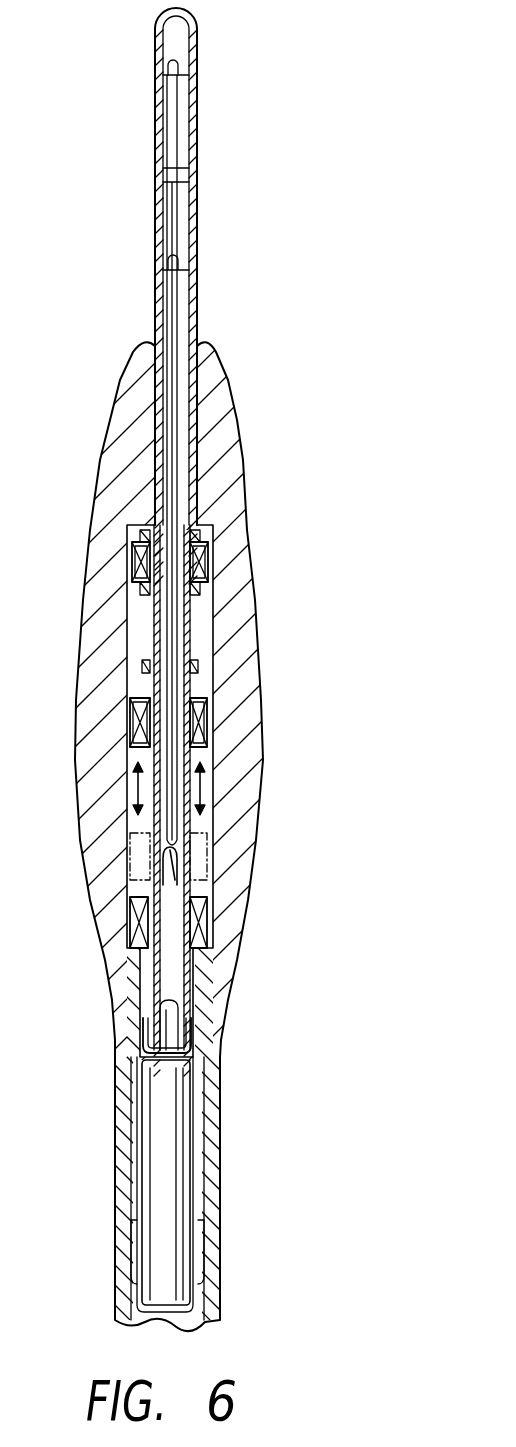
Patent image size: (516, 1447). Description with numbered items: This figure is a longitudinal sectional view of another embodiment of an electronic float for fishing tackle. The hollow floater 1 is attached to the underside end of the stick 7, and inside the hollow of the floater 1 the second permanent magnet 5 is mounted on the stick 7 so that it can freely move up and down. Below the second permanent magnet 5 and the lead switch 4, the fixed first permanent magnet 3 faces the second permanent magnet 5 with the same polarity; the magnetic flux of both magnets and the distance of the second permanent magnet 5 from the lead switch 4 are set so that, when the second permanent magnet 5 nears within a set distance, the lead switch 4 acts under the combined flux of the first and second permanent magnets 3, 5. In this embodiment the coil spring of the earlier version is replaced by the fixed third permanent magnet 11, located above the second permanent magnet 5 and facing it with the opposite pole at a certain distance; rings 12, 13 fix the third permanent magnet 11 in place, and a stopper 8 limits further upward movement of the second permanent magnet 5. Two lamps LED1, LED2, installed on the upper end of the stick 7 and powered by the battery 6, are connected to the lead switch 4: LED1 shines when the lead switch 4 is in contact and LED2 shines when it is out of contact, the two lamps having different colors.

The floater 1 is at (245, 590).
The first permanent magnet 3 is at (207, 927).
The lead switch 4 is at (177, 875).
The second permanent magnet 5 is at (208, 728).
The battery 6 is at (165, 1135).
The stick 7 is at (195, 270).
The stopper 8 is at (205, 668).
The third permanent magnet 11 is at (132, 573).
The ring 12 is at (215, 533).
The ring 13 is at (130, 595).
The lamp LED1 is at (177, 68).
The lamp LED2 is at (168, 258).